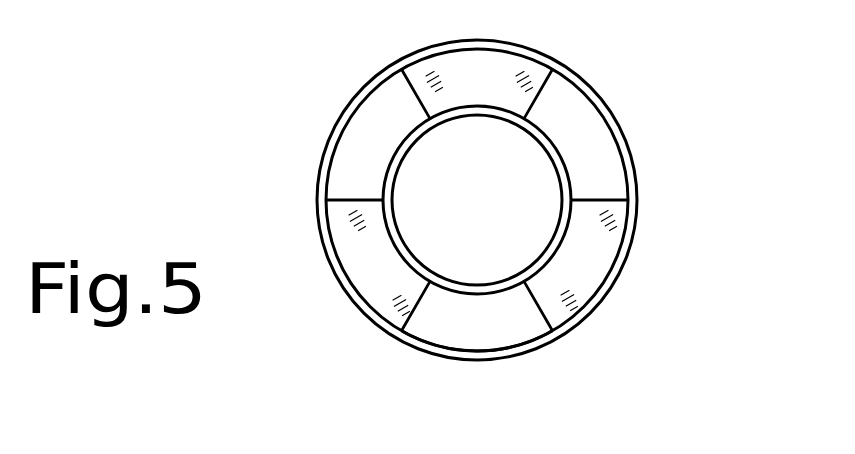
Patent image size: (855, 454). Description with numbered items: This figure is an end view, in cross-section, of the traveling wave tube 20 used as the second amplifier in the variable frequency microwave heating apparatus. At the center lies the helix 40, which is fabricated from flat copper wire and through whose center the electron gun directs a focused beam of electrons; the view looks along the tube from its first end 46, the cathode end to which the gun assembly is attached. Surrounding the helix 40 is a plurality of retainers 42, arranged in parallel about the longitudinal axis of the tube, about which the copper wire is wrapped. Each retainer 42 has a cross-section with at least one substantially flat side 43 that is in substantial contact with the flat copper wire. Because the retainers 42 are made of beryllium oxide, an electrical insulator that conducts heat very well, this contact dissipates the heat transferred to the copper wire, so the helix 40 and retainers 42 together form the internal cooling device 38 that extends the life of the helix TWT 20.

The traveling wave tube 20 is at (633, 102).
The internal cooling device 38 is at (455, 312).
The helix 40 is at (403, 138).
The retainers 42 is at (500, 94).
The flat side 43 is at (507, 128).
The first end 46 is at (570, 172).